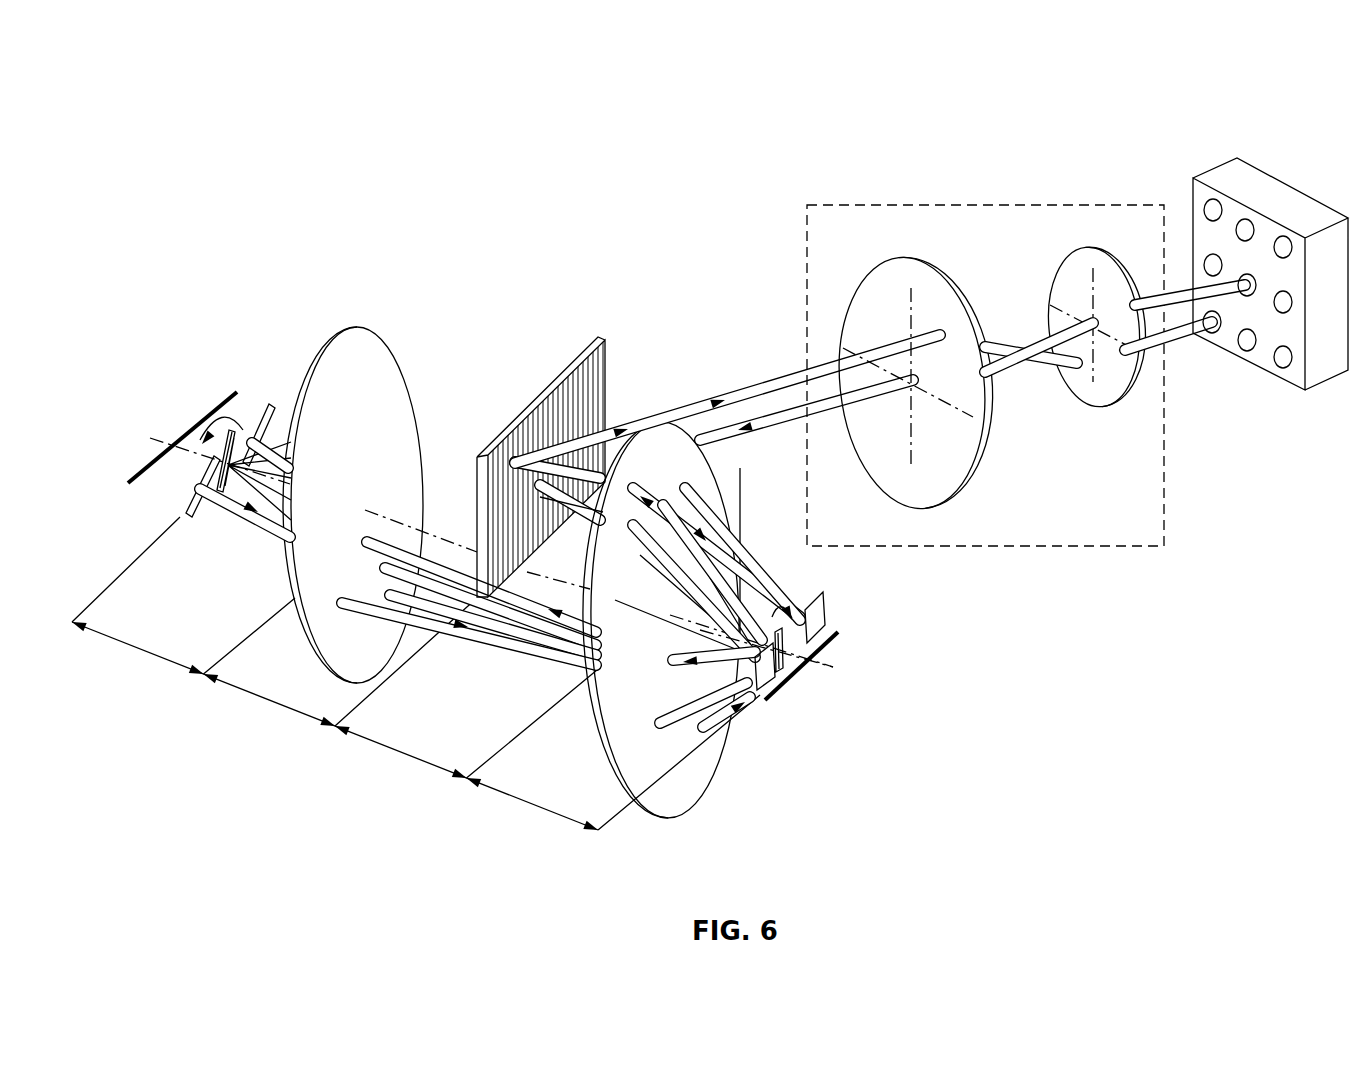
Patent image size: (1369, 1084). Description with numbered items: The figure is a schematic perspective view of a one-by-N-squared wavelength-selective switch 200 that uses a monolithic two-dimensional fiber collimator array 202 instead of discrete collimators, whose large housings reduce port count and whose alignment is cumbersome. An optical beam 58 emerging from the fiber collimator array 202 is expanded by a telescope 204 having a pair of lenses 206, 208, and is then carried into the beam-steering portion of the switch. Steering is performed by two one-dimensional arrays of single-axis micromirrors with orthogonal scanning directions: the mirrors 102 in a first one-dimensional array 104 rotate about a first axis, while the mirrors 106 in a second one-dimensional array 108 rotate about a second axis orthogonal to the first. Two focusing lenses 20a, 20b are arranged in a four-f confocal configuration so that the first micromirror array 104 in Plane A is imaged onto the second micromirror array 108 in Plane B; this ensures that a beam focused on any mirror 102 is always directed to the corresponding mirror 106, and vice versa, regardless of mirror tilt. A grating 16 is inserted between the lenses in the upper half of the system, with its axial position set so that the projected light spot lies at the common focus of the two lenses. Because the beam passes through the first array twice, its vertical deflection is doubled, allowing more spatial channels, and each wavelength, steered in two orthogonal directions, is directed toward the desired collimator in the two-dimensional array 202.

The 1×N² WSS 200 is at (203, 298).
The mirror 106 is at (270, 404).
The second 1D array 108 is at (184, 441).
The grating 16 is at (558, 383).
The focusing lens 20b is at (373, 668).
The focusing lens 20a is at (688, 800).
The optical beam 58 is at (735, 455).
The mirror 102 is at (823, 598).
The first 1D array 104 is at (777, 667).
The telescope 204 is at (940, 200).
The lens 206 is at (965, 485).
The lens 208 is at (1103, 405).
The monolithic 2D fiber collimator array 202 is at (1253, 175).